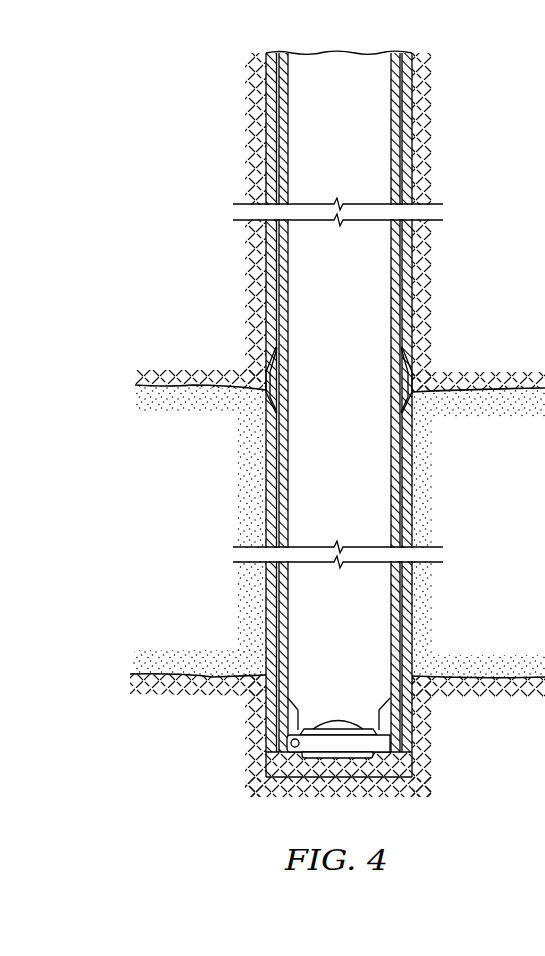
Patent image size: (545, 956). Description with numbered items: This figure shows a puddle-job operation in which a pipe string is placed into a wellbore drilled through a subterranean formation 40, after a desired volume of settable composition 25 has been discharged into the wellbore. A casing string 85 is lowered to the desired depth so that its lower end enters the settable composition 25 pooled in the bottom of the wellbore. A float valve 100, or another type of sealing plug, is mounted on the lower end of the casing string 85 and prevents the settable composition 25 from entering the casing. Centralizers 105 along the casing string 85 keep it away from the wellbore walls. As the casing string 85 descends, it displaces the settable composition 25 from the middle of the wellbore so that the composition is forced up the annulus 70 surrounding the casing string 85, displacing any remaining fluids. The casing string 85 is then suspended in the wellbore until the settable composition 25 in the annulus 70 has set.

The settable composition 25 is at (277, 302).
The subterranean formation 40 is at (187, 516).
The annulus 70 is at (408, 272).
The casing string 85 is at (392, 445).
The float valve 100 is at (390, 742).
The centralizers 105 is at (413, 397).